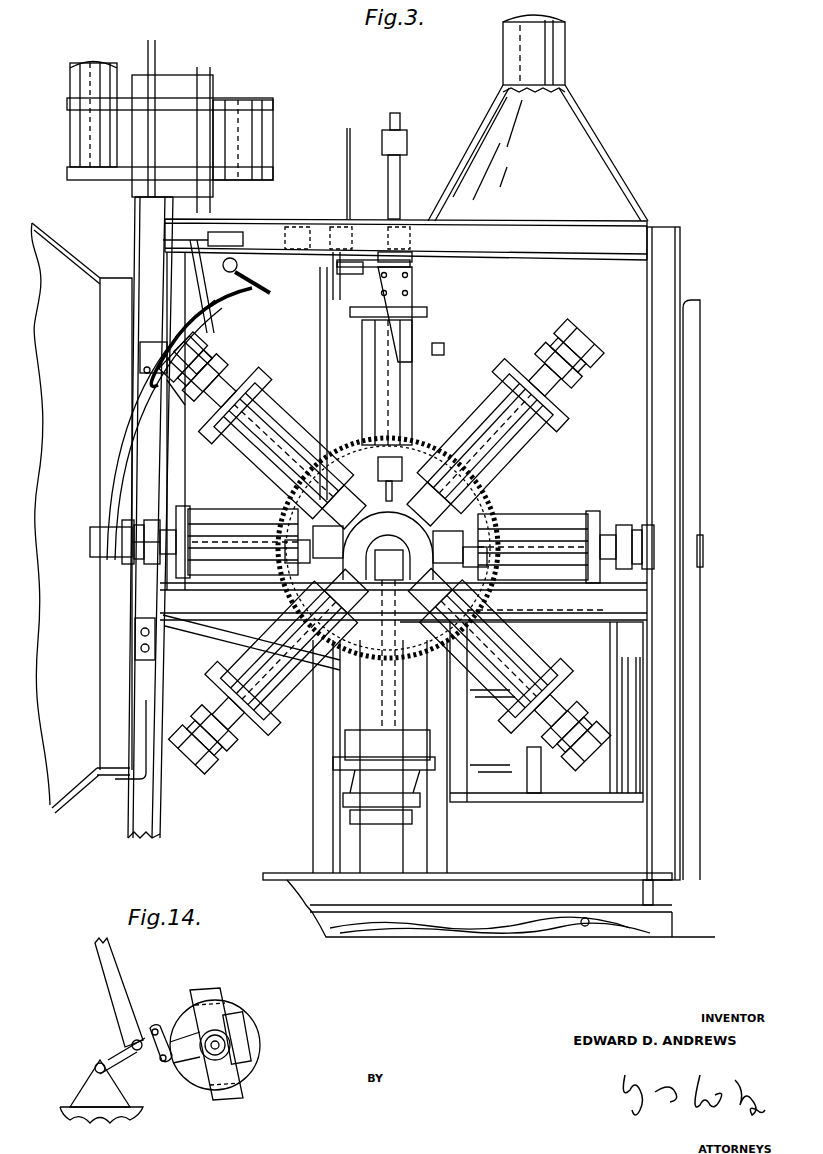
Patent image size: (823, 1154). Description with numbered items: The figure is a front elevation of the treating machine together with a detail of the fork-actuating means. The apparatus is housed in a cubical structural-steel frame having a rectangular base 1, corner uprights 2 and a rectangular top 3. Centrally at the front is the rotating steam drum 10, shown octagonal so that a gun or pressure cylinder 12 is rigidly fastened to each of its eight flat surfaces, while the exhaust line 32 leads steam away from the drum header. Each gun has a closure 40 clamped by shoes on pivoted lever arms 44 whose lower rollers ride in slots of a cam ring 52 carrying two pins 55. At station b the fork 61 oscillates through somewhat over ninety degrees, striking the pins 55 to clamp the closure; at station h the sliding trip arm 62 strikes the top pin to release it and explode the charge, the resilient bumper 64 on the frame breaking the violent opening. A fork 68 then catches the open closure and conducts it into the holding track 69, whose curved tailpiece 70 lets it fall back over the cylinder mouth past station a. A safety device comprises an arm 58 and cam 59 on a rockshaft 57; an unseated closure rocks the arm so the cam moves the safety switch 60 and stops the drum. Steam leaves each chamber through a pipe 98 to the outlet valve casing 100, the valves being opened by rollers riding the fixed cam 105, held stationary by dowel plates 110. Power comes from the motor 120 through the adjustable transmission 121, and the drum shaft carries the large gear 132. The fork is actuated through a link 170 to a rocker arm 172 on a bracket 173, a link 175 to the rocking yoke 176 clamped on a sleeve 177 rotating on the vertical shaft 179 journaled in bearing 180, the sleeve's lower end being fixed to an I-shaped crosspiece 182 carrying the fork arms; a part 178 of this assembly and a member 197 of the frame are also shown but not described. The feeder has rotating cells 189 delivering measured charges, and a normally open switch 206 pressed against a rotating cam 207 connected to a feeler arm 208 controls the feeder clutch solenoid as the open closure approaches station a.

In FIG. 3, the rectangular base 1 is at (660, 898).
In FIG. 3, the corner uprights 2 is at (160, 808).
In FIG. 3, the rectangular top 3 is at (240, 220).
In FIG. 3, the rotating steam drum 10 is at (500, 528).
In FIG. 3, the gun or pressure cylinder 12 is at (262, 395).
In FIG. 3, the exhaust line 32 is at (320, 732).
In FIG. 3, the closure 40 is at (205, 345).
In FIG. 3, the lever arm 44 is at (242, 358).
In FIG. 3, the cam ring 52 is at (250, 384).
In FIG. 3, the pins 55 is at (444, 348).
In FIG. 3, the rockshaft 57 is at (249, 282).
In FIG. 3, the arm 58 is at (270, 290).
In FIG. 3, the cam 59 is at (223, 265).
In FIG. 3, the safety switch 60 is at (243, 235).
In FIG. 3, the fork 61 is at (427, 315).
In FIG. 3, the sliding trip arm 62 is at (186, 505).
In FIG. 3, the resilient bumper 64 is at (90, 542).
In FIG. 3, the fork 68 is at (107, 493).
In FIG. 3, the holding track 69 is at (118, 430).
In FIG. 3, the curved tailpiece 70 is at (245, 292).
In FIG. 3, the pipe 98 is at (482, 395).
In FIG. 3, the outlet valve casing 100 is at (388, 445).
In FIG. 3, the fixed cam 105 is at (493, 500).
In FIG. 3, the dowel plates 110 is at (402, 460).
In FIG. 3, the motor 120 is at (545, 780).
In FIG. 3, the transmission 121 is at (647, 647).
In FIG. 3, the large gear 132 is at (480, 500).
In FIG. 3, the link 170 is at (235, 286).
In FIG. 14, the link 170 is at (110, 985).
In FIG. 3, the rocker arm 172 is at (330, 280).
In FIG. 14, the rocker arm 172 is at (110, 1046).
In FIG. 3, the bracket 173 is at (292, 302).
In FIG. 14, the bracket 173 is at (78, 1090).
In FIG. 3, the link 175 is at (340, 225).
In FIG. 14, the link 175 is at (172, 1020).
In FIG. 14, the rocking yoke 176 is at (245, 1020).
In FIG. 3, the sleeve 177 is at (410, 264).
In FIG. 14, the sleeve 177 is at (240, 1060).
In FIG. 3, the rod 178 is at (412, 255).
In FIG. 14, the rod 178 is at (218, 1030).
In FIG. 3, the vertical shaft 179 is at (400, 180).
In FIG. 3, the bearing 180 is at (407, 140).
In FIG. 3, the I-shaped crosspiece 182 is at (412, 285).
In FIG. 14, the I-shaped crosspiece 182 is at (212, 1090).
In FIG. 3, the cells or pockets 189 is at (70, 146).
In FIG. 3, the strut 197 is at (208, 640).
In FIG. 3, the normally open switch 206 is at (140, 357).
In FIG. 3, the rotating cam 207 is at (144, 372).
In FIG. 3, the feeler arm 208 is at (175, 420).